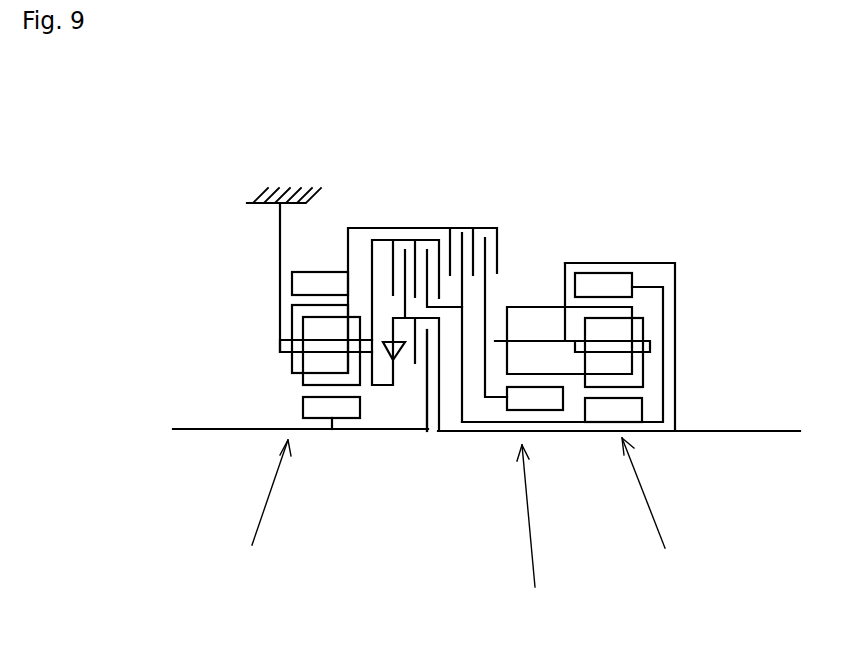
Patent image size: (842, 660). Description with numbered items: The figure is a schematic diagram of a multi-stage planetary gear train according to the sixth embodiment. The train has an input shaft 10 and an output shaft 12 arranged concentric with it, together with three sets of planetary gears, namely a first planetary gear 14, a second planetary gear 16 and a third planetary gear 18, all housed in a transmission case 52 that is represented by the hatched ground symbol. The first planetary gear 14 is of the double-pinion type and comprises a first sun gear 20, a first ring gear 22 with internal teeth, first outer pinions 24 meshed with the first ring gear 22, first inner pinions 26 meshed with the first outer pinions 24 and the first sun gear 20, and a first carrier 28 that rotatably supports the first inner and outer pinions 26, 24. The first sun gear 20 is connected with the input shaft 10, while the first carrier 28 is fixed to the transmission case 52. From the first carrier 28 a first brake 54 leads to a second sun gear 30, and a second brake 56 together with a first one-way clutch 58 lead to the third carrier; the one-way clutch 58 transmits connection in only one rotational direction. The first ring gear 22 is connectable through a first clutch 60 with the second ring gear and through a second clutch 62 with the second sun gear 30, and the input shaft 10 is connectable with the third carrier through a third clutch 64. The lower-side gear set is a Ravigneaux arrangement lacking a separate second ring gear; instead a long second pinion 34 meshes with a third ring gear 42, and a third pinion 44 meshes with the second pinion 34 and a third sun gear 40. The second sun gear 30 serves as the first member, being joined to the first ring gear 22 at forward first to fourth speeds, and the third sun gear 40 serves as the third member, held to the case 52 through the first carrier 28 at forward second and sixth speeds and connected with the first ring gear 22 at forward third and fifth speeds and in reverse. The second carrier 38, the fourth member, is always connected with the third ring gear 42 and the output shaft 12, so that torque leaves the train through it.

The input shaft 10 is at (210, 428).
The output shaft 12 is at (733, 432).
The first planetary gear 14 is at (266, 509).
The second planetary gear 16 is at (533, 532).
The third planetary gear 18 is at (622, 421).
The first sun gear 20 is at (325, 408).
The first ring gear 22 is at (312, 285).
The first outer pinions 24 is at (297, 325).
The first inner pinions 26 is at (308, 378).
The first carrier 28 is at (280, 347).
The second sun gear 30 is at (525, 400).
The second pinion 34 is at (525, 323).
The second carrier 38 is at (655, 347).
The third sun gear 40 is at (602, 408).
The third ring gear 42 is at (600, 283).
The third pinion 44 is at (637, 330).
The transmission case 52 is at (270, 187).
The first brake 54 is at (426, 250).
The second brake 56 is at (403, 248).
The first one-way clutch 58 is at (404, 368).
The first clutch 60 is at (488, 238).
The second clutch 62 is at (463, 232).
The third clutch 64 is at (430, 337).